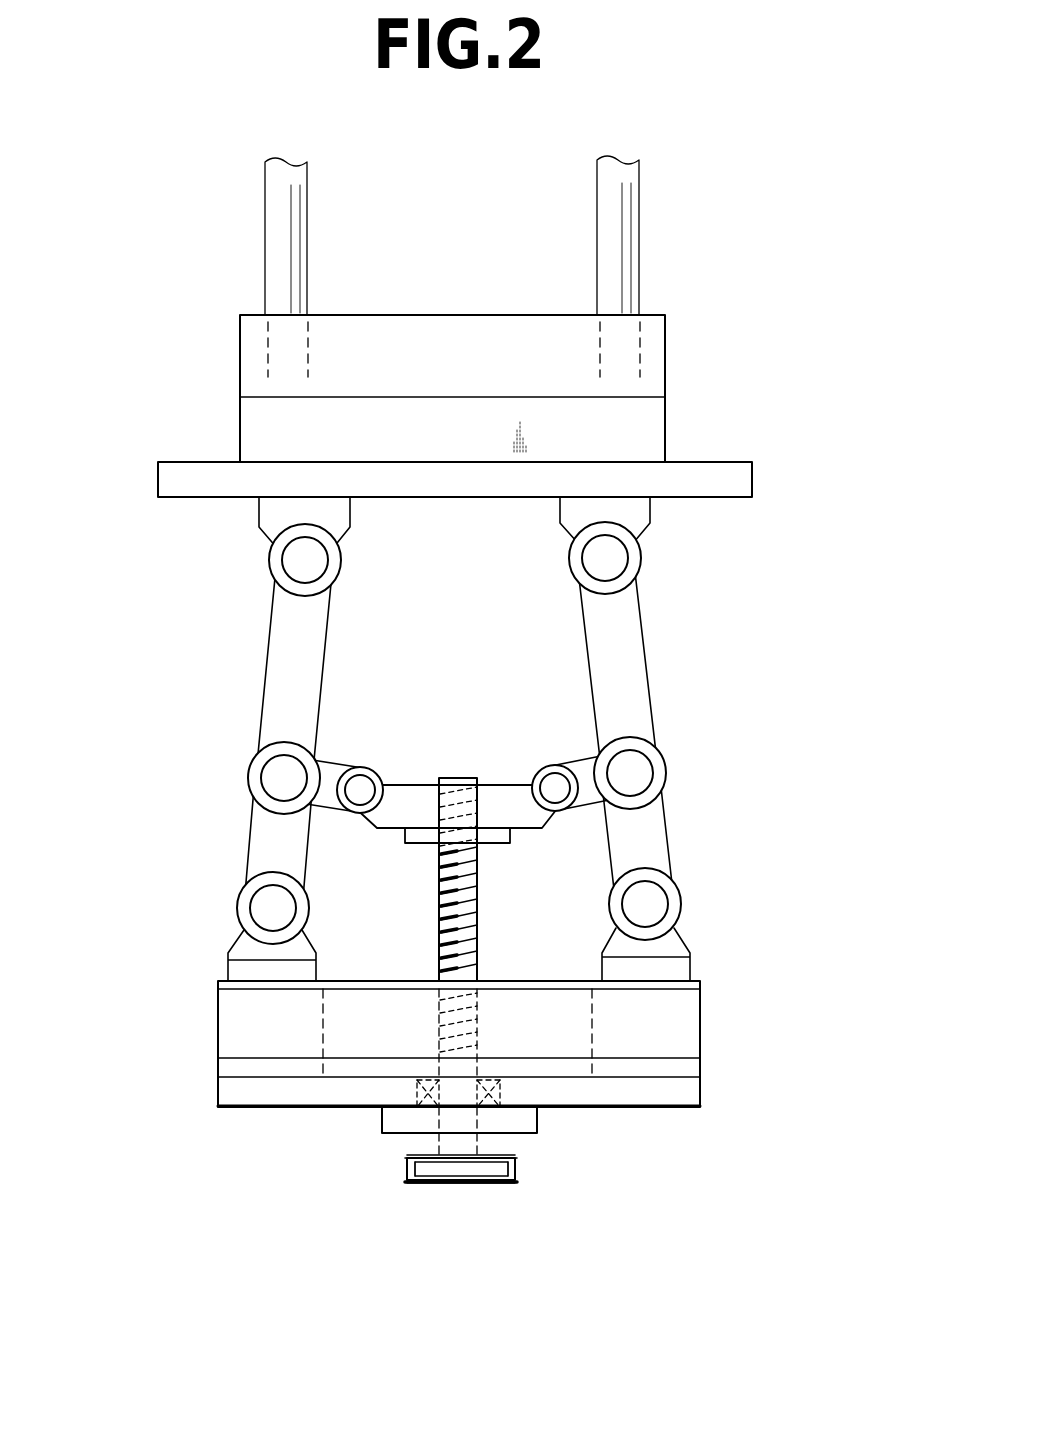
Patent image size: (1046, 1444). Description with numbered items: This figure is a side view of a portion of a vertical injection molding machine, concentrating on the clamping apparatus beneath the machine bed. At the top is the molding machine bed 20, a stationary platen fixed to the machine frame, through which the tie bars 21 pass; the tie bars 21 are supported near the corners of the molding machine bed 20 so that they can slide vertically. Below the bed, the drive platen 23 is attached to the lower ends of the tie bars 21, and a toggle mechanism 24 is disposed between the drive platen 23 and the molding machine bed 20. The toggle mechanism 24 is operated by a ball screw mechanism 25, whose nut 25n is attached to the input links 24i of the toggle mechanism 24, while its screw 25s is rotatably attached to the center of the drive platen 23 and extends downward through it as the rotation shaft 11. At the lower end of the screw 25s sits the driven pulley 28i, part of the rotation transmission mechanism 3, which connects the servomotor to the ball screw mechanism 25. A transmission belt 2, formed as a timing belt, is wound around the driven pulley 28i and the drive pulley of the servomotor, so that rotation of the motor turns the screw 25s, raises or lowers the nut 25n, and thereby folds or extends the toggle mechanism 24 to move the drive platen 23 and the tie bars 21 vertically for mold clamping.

The transmission belt 2 is at (515, 1168).
The rotation transmission mechanism 3 is at (420, 1188).
The rotation shaft 11 is at (480, 1143).
The molding machine bed 20 is at (666, 415).
The tie bars 21 is at (266, 247).
The drive platen 23 is at (700, 1030).
The toggle mechanism 24 is at (675, 672).
The input links 24i is at (335, 755).
The ball screw mechanism 25 is at (481, 865).
The nut 25n is at (420, 785).
The screw 25s is at (478, 900).
The driven pulley 28i is at (503, 1187).